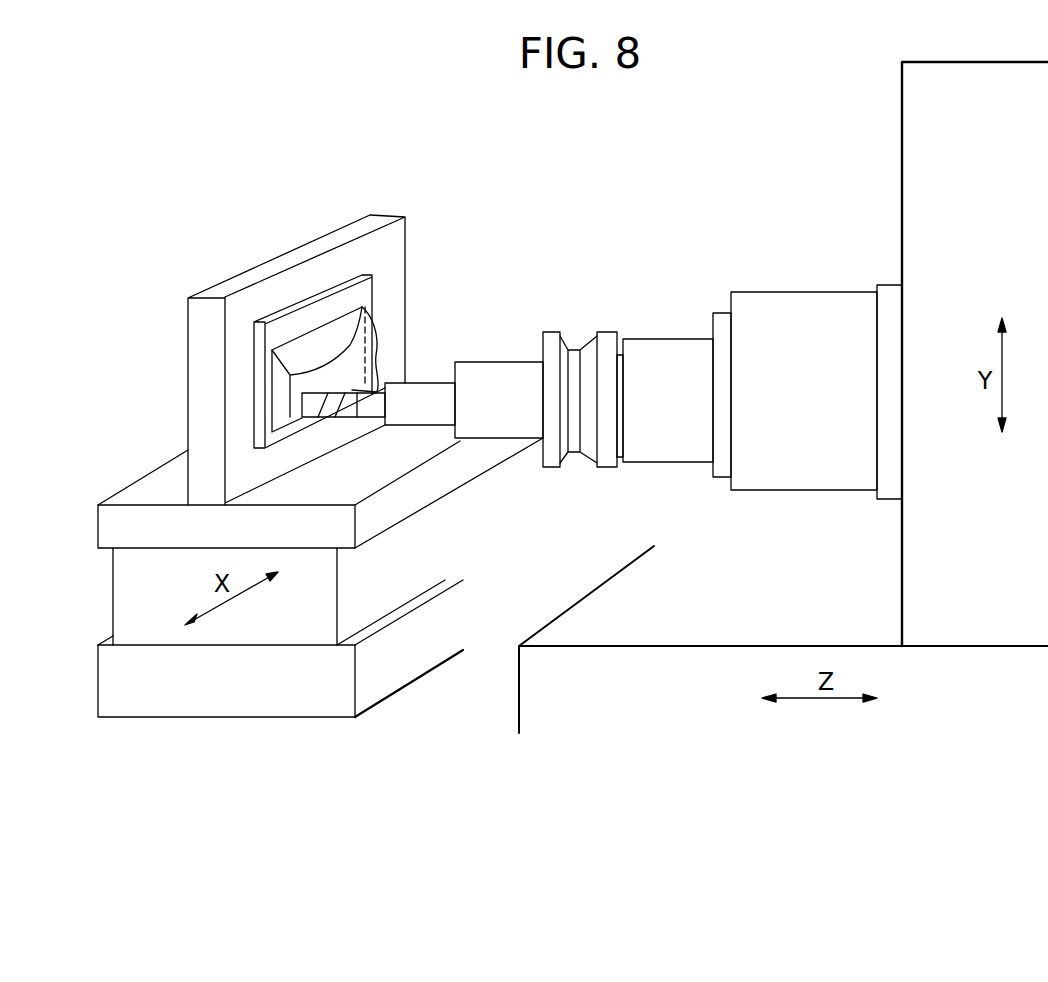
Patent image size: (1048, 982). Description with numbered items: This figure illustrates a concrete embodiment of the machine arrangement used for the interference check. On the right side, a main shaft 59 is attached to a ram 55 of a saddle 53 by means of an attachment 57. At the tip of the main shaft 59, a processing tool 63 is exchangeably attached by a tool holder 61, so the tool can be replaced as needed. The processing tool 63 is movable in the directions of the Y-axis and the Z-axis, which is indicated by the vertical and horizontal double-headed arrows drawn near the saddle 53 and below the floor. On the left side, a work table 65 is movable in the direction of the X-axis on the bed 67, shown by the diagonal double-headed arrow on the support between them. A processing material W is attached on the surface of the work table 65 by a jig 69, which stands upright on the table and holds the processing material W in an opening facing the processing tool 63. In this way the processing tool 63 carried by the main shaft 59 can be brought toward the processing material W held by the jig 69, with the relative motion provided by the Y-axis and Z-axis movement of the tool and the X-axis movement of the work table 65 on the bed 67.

The saddle 53 is at (920, 153).
The ram 55 is at (890, 285).
The attachment 57 is at (808, 470).
The main shaft 59 is at (667, 448).
The tool holder 61 is at (510, 372).
The processing tool 63 is at (343, 410).
The work table 65 is at (472, 462).
The bed 67 is at (398, 595).
The jig 69 is at (393, 247).
The processing material W is at (370, 322).